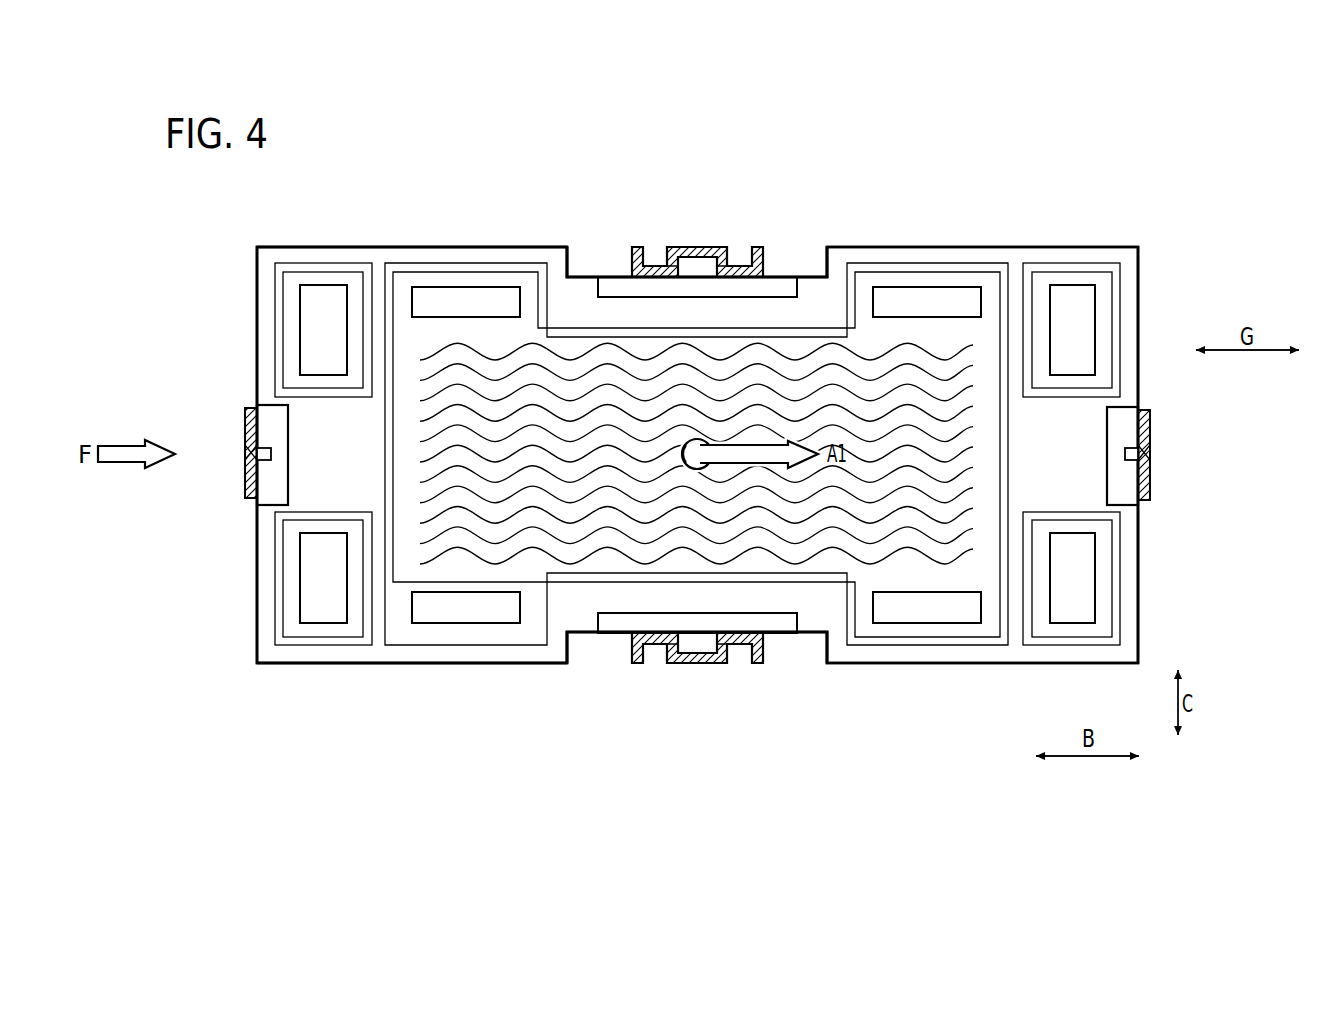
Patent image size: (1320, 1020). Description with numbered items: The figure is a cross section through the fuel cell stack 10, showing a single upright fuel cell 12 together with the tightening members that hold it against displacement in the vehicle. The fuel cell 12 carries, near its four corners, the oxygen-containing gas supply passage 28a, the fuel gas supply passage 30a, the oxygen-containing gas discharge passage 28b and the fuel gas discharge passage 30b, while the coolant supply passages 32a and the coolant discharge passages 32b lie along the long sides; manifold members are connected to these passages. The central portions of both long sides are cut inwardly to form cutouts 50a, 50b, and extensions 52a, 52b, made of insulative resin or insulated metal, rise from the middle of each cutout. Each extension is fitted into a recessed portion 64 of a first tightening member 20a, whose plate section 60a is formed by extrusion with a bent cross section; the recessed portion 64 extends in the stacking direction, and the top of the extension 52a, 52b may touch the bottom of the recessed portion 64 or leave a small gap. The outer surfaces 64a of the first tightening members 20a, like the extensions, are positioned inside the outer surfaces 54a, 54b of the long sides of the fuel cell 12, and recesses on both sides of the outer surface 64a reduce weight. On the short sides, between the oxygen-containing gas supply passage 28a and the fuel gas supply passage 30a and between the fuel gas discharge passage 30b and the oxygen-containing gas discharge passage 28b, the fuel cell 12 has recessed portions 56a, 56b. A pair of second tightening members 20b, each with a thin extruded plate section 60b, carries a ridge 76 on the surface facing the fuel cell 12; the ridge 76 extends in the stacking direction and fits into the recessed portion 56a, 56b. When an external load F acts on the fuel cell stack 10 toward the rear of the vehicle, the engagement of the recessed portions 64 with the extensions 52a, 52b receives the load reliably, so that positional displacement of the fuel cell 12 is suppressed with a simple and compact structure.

The fuel cell stack 10 is at (964, 165).
The fuel cell 12 is at (1097, 246).
The first tightening member 20a is at (711, 457).
The second tightening member 20b is at (715, 442).
The oxygen-containing gas supply passage 28a is at (1071, 330).
The oxygen-containing gas discharge passage 28b is at (323, 578).
The fuel gas supply passage 30a is at (1071, 578).
The fuel gas discharge passage 30b is at (323, 330).
The coolant supply passage 32a is at (927, 455).
The coolant discharge passage 32b is at (466, 455).
The cutout 50a is at (592, 276).
The cutout 50b is at (587, 636).
The extension 52a is at (688, 260).
The extension 52b is at (692, 644).
The outer surface 54a is at (517, 246).
The outer surface 54b is at (517, 671).
The recessed portion 56a is at (1140, 450).
The recessed portion 56b is at (253, 453).
The plate section 60a is at (710, 244).
The plate section 60b is at (244, 440).
The recessed portion 64 is at (703, 258).
The outer surface 64a is at (720, 249).
The ridge 76 is at (272, 460).